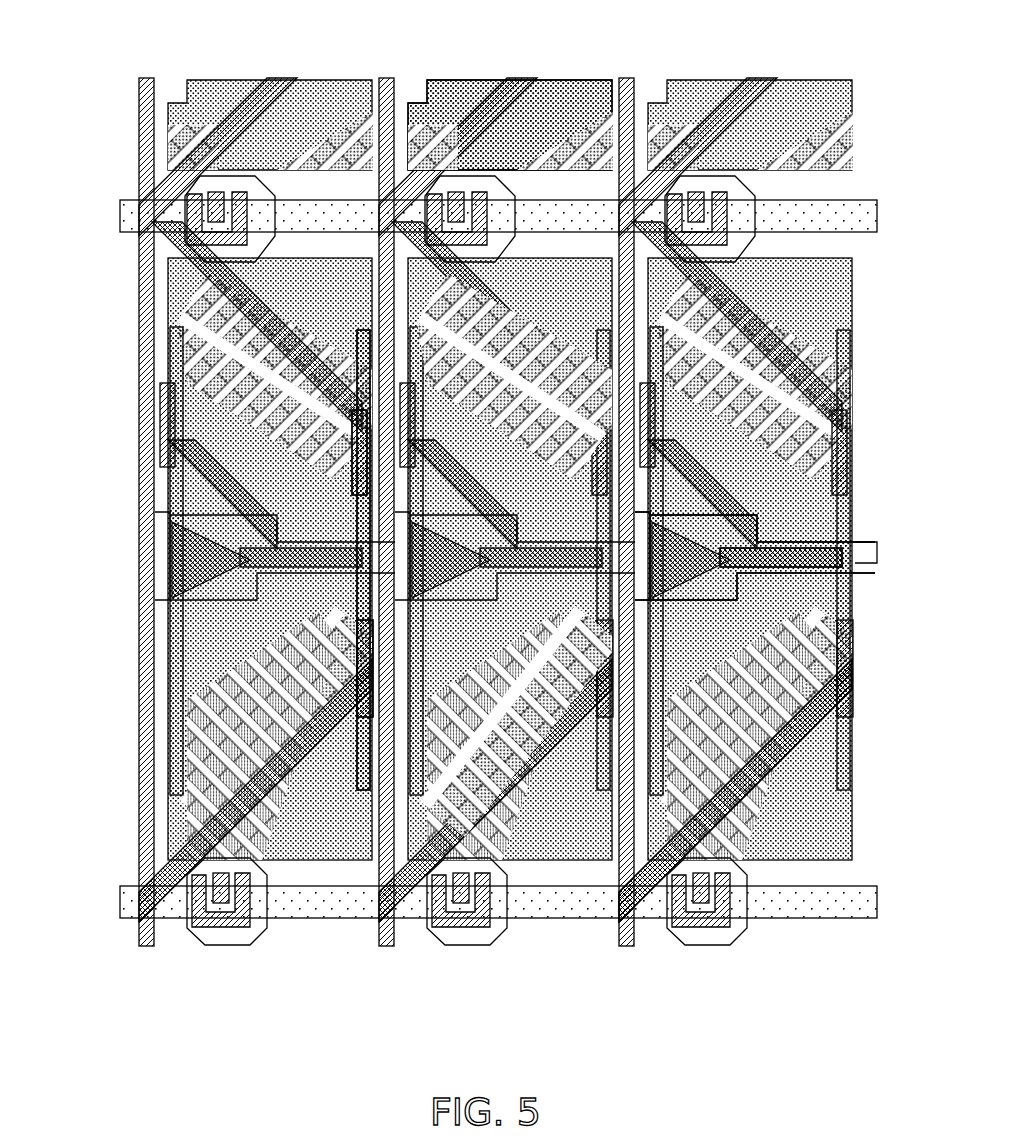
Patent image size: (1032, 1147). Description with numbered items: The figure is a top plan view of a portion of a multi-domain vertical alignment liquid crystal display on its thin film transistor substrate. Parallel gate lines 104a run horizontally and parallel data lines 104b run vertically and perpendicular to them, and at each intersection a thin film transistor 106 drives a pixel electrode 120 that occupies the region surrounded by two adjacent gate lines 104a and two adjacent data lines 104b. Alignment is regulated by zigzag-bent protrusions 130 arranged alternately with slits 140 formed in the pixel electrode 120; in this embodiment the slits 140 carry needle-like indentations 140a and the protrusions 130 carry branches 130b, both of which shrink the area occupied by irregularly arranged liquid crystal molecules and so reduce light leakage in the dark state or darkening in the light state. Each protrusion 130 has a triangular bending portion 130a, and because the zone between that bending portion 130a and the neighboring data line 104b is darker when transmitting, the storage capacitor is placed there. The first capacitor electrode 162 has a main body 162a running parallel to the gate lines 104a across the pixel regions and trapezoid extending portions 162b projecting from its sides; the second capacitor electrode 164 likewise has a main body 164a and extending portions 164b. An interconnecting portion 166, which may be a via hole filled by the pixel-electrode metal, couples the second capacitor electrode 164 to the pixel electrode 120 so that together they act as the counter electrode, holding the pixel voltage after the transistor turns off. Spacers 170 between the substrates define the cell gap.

The gate line 104a is at (120, 216).
The data line 104b is at (138, 100).
The thin film transistor 106 is at (283, 214).
The pixel electrode 120 is at (168, 298).
The protrusion 130 is at (259, 92).
The bending portion 130a is at (230, 498).
The branch 130b is at (640, 940).
The slit 140 is at (362, 410).
The needle-like indentation 140a is at (578, 100).
The first capacitor electrode 162 is at (160, 586).
The main body of first capacitor electrode 162a is at (552, 600).
The extending portion of first capacitor electrode 162b is at (375, 575).
The second capacitor electrode 164 is at (170, 608).
The main body of second capacitor electrode 164a is at (335, 560).
The extending portion of second capacitor electrode 164b is at (207, 640).
The interconnecting portion 166 is at (718, 537).
The spacer 170 is at (718, 516).